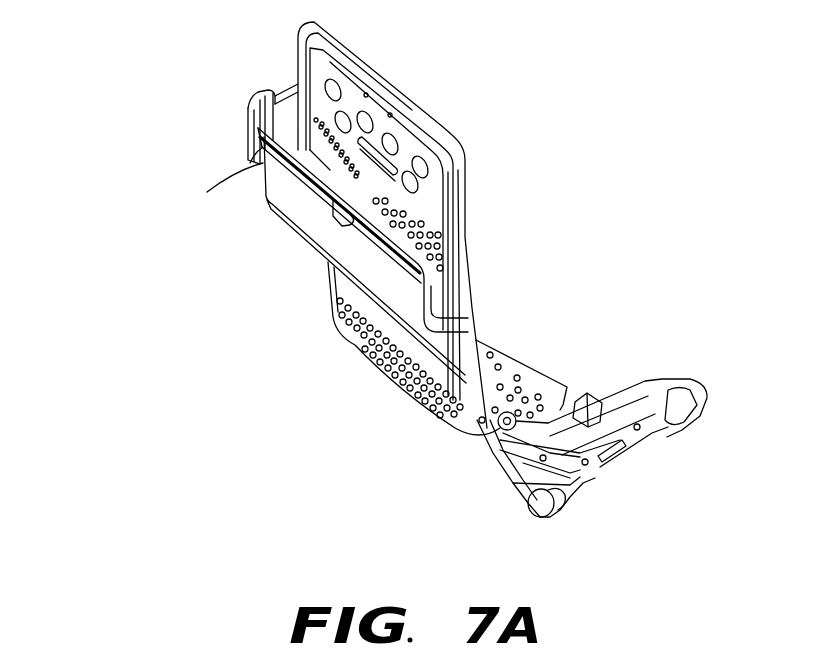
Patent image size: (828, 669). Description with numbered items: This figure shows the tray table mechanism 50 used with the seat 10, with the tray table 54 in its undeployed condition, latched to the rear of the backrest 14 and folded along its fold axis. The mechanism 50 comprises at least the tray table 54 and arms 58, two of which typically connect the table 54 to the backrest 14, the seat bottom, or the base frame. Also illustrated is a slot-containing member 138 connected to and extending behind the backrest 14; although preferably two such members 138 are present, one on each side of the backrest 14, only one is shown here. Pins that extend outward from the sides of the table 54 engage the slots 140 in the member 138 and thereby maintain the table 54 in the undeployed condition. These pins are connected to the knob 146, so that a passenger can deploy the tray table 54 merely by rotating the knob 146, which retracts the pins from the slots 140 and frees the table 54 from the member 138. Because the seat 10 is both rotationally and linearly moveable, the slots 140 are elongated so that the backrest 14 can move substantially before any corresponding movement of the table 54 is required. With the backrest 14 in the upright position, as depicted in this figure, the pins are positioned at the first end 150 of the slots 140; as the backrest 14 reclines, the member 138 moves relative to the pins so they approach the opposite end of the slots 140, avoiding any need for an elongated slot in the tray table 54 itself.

The seat 10 is at (609, 148).
The backrest 14 is at (467, 213).
The tray table mechanism 50 is at (268, 345).
The tray table 54 is at (247, 221).
The arms 58 is at (483, 337).
The slot-containing member 138 is at (247, 143).
The slots 140 is at (260, 92).
The knob 146 is at (350, 222).
The first end 150 is at (250, 163).